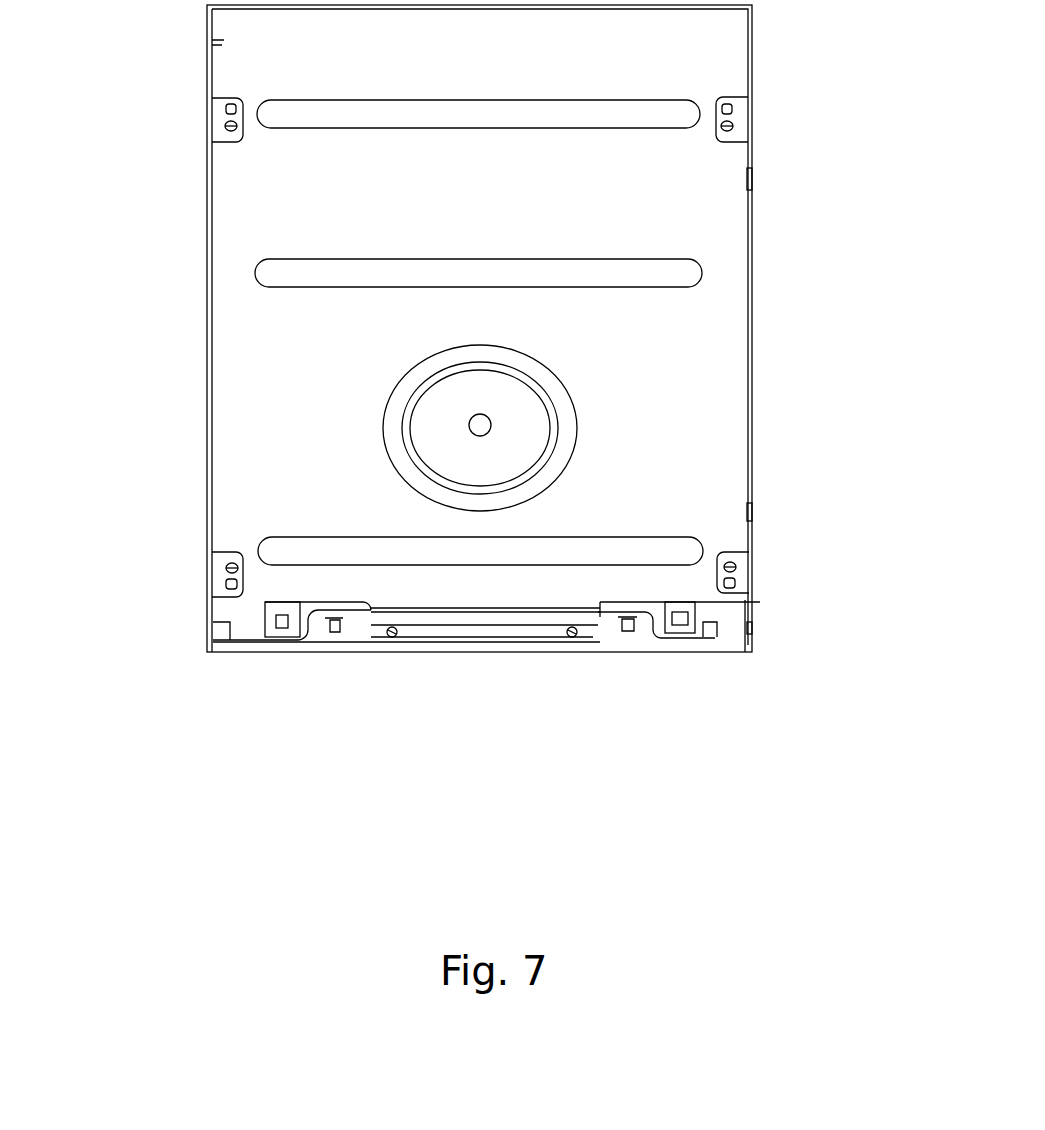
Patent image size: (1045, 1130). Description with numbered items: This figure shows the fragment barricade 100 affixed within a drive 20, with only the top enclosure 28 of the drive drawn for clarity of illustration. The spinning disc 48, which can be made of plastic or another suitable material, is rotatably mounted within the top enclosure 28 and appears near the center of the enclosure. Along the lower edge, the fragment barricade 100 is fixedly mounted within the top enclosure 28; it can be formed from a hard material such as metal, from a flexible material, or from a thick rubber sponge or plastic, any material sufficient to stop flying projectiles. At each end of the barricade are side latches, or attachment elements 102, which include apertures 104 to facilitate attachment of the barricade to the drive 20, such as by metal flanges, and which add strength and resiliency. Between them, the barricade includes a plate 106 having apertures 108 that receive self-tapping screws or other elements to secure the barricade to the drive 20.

The drive 20 is at (722, 490).
The top enclosure 28 is at (752, 246).
The spinning disc 48 is at (533, 430).
The fragment barricade 100 is at (612, 600).
The attachment elements 102 is at (265, 605).
The apertures 104 is at (278, 628).
The plate 106 is at (445, 625).
The apertures 108 is at (392, 637).